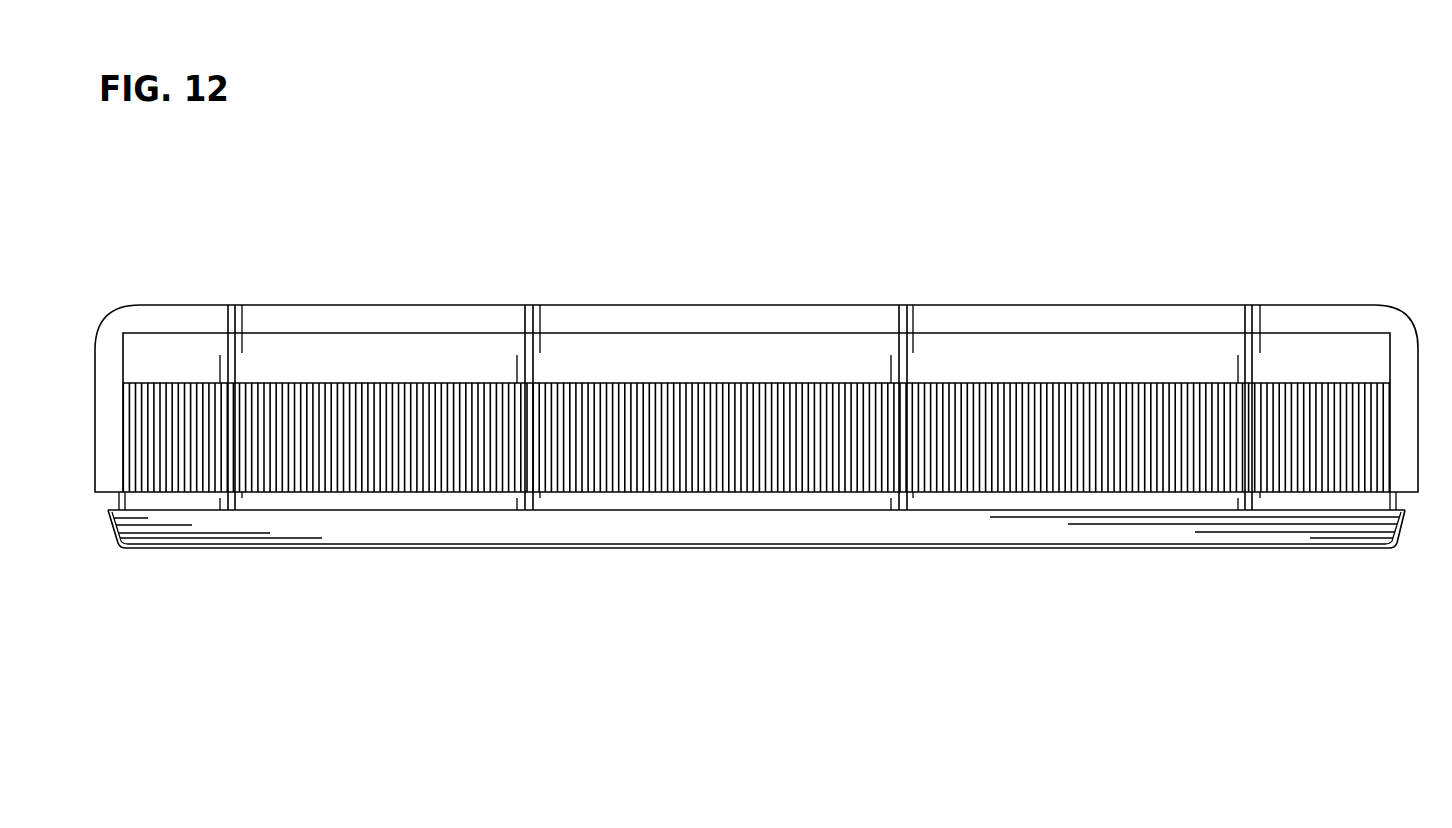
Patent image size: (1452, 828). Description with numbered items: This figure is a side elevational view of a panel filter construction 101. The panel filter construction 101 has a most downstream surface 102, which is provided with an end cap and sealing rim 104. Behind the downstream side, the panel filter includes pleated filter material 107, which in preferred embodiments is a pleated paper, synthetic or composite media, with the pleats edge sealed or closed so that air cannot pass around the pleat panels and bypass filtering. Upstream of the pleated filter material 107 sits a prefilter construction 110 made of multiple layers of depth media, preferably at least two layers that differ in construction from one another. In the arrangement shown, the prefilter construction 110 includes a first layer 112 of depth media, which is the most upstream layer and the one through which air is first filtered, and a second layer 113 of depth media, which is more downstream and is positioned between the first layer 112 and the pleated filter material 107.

The panel filter construction 101 is at (964, 577).
The most downstream surface 102 is at (587, 548).
The end cap and sealing rim 104 is at (753, 525).
The pleated filter material 107 is at (387, 440).
The prefilter construction 110 is at (973, 303).
The first layer of depth media 112 is at (1277, 318).
The second layer of depth media 113 is at (1352, 358).